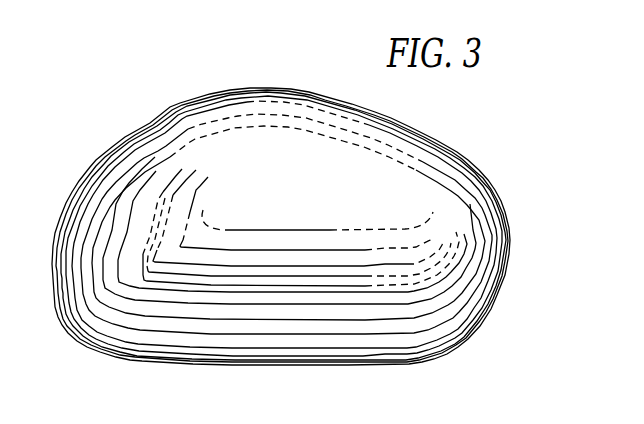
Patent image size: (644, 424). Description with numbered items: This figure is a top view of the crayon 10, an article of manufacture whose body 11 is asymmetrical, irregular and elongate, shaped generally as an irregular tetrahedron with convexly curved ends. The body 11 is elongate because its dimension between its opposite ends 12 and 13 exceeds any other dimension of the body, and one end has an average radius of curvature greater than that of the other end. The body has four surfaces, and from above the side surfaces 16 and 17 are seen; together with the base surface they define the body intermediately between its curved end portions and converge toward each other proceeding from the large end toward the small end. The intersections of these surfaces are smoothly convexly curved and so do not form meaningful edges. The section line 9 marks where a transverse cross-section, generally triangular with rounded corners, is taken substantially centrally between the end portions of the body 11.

The section line 9- 9 is at (283, 78).
The crayon 10 is at (515, 139).
The body 11 is at (455, 204).
The end 12 is at (55, 248).
The end 13 is at (510, 243).
The second surface 16 is at (368, 312).
The third surface 17 is at (288, 192).